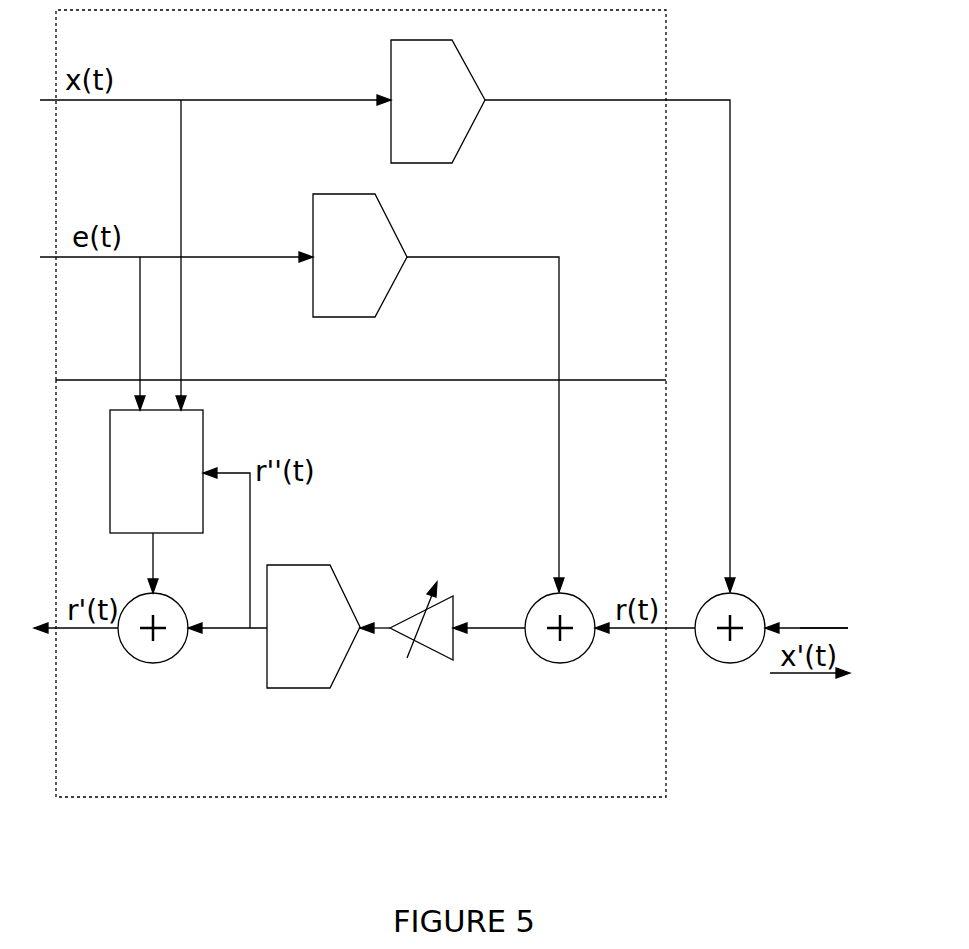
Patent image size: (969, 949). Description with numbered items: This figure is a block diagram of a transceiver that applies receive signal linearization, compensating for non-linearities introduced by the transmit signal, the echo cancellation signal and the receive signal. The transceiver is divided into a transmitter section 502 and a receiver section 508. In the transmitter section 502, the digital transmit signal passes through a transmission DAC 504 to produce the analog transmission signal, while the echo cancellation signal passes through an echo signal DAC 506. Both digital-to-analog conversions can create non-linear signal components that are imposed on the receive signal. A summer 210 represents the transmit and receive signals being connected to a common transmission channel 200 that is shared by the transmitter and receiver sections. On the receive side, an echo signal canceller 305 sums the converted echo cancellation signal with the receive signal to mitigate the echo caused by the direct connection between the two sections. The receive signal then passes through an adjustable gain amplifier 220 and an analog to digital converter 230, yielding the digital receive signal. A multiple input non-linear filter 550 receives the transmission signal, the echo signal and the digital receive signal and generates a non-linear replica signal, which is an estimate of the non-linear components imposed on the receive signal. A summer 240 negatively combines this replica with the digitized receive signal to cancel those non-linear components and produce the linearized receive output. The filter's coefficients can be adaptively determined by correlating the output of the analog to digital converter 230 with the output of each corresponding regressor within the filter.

The transmitter section 502 is at (250, 52).
The transmission DAC 504 is at (445, 137).
The echo signal DAC 506 is at (370, 294).
The receiver section 508 is at (315, 422).
The multiple input non-linear filter 550 is at (175, 513).
The transmission channel 200 is at (800, 602).
The summer 210 is at (740, 648).
The adjustable gain amplifier 220 is at (436, 649).
The analog to digital converter 230 is at (295, 664).
The summer 240 is at (155, 648).
The echo signal canceller 305 is at (561, 652).